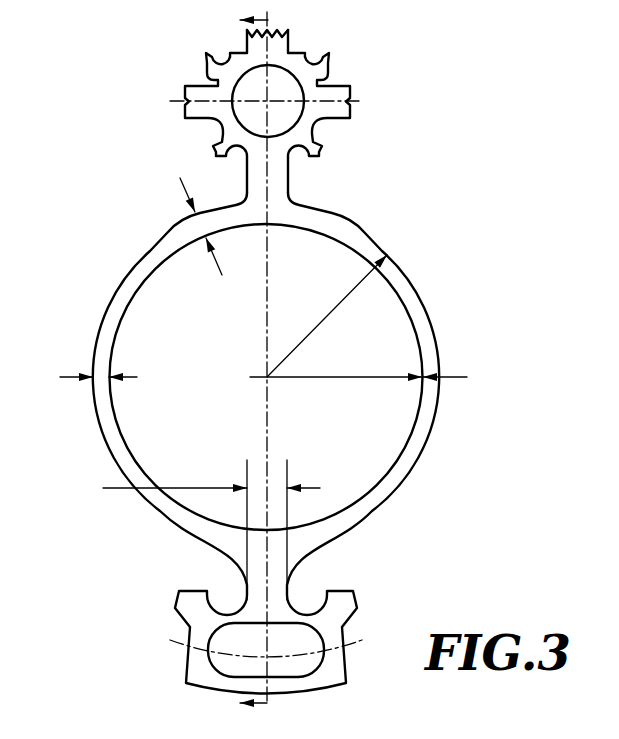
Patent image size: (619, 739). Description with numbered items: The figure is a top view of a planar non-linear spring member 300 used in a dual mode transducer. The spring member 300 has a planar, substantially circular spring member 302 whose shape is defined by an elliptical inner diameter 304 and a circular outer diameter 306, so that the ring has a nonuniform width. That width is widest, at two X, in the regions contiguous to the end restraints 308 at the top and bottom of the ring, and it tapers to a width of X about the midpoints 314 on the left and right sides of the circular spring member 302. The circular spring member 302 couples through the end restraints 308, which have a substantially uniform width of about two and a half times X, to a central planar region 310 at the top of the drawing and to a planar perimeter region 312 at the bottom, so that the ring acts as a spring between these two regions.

The planar non-linear spring member 300 is at (283, 363).
The substantially circular spring member 302 is at (412, 279).
The elliptical inner diameter 304 is at (336, 389).
The circular outer diameter 306 is at (328, 314).
The end restraints 308 is at (292, 183).
The central planar region 310 is at (273, 90).
The planar perimeter region 312 is at (352, 632).
The midpoints 314 is at (309, 379).